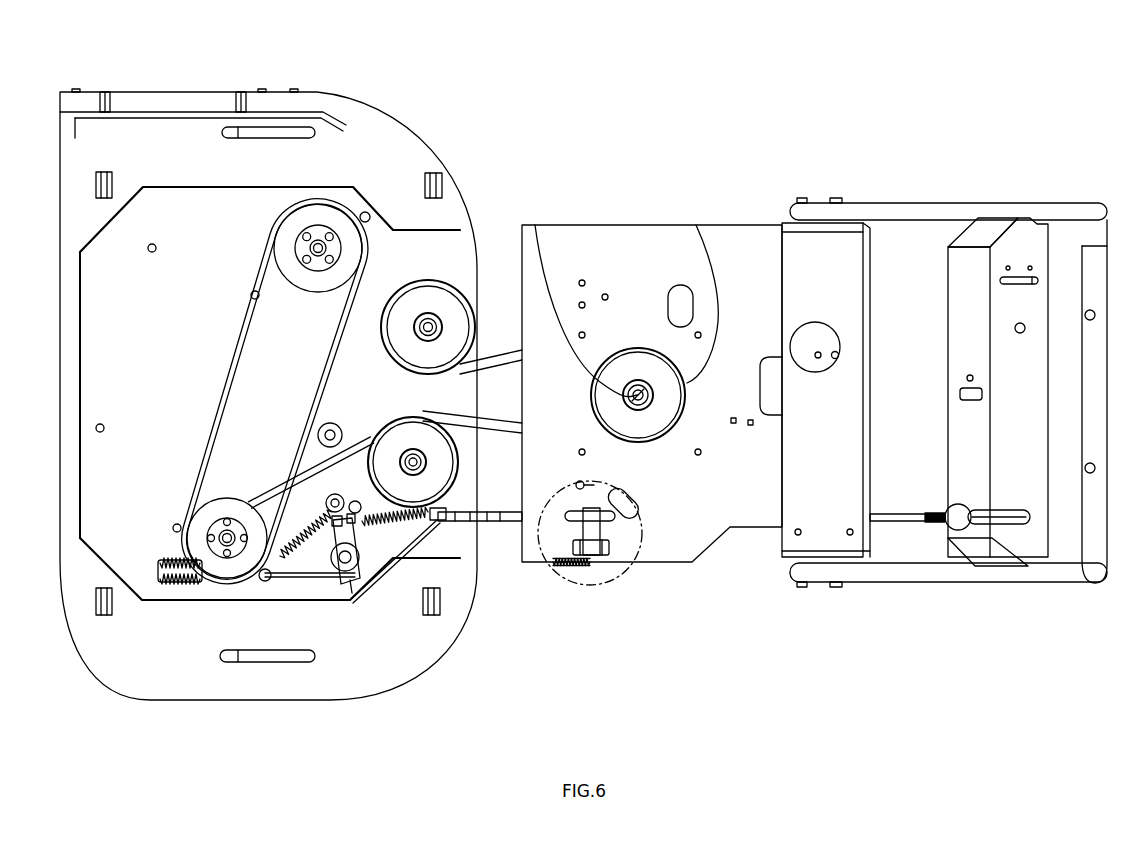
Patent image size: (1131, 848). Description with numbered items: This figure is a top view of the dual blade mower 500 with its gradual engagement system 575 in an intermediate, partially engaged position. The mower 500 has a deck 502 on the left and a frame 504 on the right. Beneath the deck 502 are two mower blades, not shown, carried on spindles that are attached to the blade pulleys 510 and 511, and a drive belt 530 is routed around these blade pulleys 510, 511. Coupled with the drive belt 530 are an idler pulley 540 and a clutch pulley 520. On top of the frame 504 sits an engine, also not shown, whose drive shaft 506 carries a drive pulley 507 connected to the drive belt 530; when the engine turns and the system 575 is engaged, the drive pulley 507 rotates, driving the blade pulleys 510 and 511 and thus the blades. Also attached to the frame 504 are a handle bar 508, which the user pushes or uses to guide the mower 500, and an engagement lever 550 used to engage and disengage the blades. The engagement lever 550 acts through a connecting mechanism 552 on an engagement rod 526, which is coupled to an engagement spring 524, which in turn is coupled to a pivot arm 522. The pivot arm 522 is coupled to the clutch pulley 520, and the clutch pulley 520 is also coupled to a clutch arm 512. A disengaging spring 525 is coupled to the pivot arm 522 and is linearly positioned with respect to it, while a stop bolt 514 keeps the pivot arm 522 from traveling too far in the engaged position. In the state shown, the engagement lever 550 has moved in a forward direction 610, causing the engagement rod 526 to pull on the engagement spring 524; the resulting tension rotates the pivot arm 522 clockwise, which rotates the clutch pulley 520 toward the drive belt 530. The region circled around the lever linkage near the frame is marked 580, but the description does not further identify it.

The dual blade mower 500 is at (698, 63).
The deck 502 is at (345, 117).
The frame 504 is at (616, 238).
The drive shaft 506 is at (535, 226).
The drive pulley 507 is at (696, 226).
The handle bar 508 is at (1073, 217).
The blade pulley 510 is at (288, 234).
The blade pulley 511 is at (202, 528).
The clutch arm 512 is at (345, 445).
The stop bolt 514 is at (357, 515).
The clutch pulley 520 is at (402, 443).
The pivot arm 522 is at (332, 525).
The engagement spring 524 is at (393, 515).
The disengaging spring 525 is at (305, 525).
The engagement rod 526 is at (489, 527).
The drive belt 530 is at (232, 388).
The idler pulley 540 is at (407, 303).
The engagement lever 550 is at (958, 530).
The connecting mechanism 552 is at (580, 584).
The gradual engagement system 575 is at (268, 710).
The latch assembly 580 is at (606, 594).
The forward direction 610 is at (1012, 618).